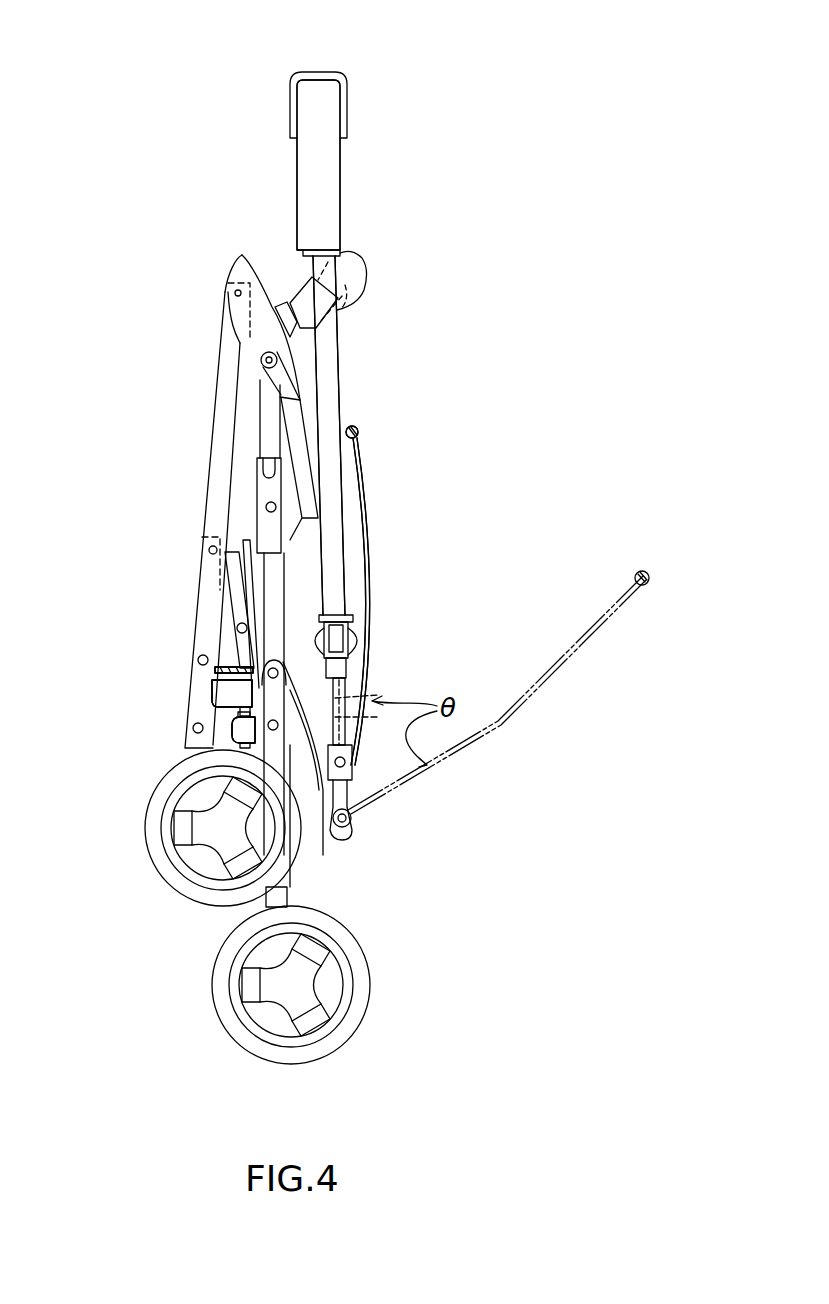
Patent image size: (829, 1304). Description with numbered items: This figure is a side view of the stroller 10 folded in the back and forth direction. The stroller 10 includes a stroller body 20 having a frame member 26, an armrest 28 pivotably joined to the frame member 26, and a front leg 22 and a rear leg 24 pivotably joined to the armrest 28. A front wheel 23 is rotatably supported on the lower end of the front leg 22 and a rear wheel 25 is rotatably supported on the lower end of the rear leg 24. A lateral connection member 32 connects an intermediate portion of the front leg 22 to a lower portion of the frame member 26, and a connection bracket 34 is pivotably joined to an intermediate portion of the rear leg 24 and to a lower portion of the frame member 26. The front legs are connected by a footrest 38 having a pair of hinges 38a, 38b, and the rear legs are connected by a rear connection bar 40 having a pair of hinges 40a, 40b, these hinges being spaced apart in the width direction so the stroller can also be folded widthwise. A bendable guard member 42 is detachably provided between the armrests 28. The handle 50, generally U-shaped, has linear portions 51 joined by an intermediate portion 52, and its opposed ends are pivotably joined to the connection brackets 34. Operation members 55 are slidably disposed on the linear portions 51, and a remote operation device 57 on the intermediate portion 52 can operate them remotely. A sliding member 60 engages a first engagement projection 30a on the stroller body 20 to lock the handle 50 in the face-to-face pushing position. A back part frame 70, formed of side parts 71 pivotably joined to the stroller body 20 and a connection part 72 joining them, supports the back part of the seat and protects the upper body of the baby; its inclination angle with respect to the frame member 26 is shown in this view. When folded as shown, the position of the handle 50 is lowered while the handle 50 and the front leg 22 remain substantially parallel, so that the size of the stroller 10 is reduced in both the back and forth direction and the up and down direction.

The stroller 10 is at (143, 62).
The stroller body 20 is at (198, 171).
The front leg 22 is at (222, 462).
The front wheel 23 is at (152, 834).
The rear leg 24 is at (272, 896).
The rear wheel 25 is at (365, 985).
The frame member 26 is at (373, 678).
The armrest 28 is at (238, 268).
The first engagement portion 30a is at (259, 359).
The lateral connection member 32 is at (234, 612).
The connection bracket 34 is at (322, 850).
The footrest 38 is at (236, 669).
The hinge 38a is at (236, 688).
The hinge 38b is at (236, 688).
The rear connection bar 40 is at (236, 713).
The hinge 40a is at (234, 743).
The hinge 40b is at (234, 743).
The guard member 42 is at (361, 270).
The handle 50 is at (353, 169).
The linear portion 51 is at (333, 360).
The intermediate portion 52 is at (330, 200).
The operation member 55 is at (357, 807).
The remote operation device 57 is at (322, 70).
The sliding member 60 is at (353, 622).
The back part frame 70 is at (379, 499).
The side part 71 is at (369, 548).
The connection part 72 is at (362, 432).